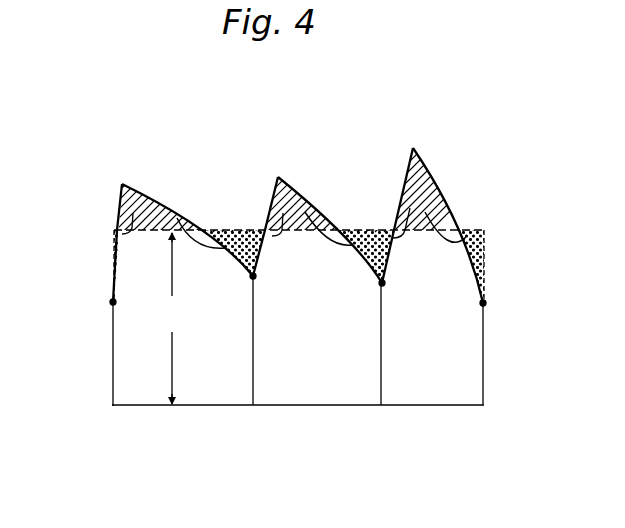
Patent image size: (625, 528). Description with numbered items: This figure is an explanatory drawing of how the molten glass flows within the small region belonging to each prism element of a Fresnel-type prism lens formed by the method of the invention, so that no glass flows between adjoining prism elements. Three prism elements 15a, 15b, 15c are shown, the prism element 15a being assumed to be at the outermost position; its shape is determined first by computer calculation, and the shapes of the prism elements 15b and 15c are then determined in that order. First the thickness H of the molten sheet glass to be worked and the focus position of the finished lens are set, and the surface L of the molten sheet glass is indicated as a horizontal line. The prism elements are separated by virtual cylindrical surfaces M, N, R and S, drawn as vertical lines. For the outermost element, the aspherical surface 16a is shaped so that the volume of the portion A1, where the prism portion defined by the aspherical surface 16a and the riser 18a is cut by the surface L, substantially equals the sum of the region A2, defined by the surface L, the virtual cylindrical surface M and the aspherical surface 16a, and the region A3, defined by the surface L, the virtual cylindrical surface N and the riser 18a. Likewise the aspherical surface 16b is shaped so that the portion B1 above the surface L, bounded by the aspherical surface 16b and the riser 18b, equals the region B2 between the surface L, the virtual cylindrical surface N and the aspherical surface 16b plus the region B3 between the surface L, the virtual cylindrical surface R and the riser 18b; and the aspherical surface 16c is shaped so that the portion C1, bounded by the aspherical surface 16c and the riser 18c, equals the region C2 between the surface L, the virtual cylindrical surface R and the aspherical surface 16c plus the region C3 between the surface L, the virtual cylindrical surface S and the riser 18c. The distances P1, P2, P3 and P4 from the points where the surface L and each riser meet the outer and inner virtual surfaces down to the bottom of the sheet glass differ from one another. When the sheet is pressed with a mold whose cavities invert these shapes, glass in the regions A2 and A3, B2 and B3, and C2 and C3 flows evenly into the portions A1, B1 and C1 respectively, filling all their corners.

The portion C1 is at (128, 183).
The aspherical surface 16c is at (177, 218).
The riser 18b is at (270, 200).
The portion B1 is at (283, 195).
The aspherical surface 16b is at (310, 210).
The portion A1 is at (420, 178).
The aspherical surface 16a is at (455, 207).
The surface of the molten sheet glass L is at (477, 217).
The riser 18a is at (400, 199).
The riser 18c is at (120, 207).
The region B3 is at (259, 240).
The region A2 is at (480, 247).
The region A3 is at (391, 243).
The region C3 is at (114, 256).
The distance P4 is at (97, 303).
The thickness of molten sheet glass H is at (172, 318).
The region C2 is at (240, 266).
The distance P3 is at (268, 279).
The region B2 is at (368, 263).
The distance P2 is at (397, 291).
The distance P1 is at (498, 304).
The virtual cylindrical surface S is at (112, 340).
The prism element 15c is at (195, 392).
The virtual cylindrical surface R is at (253, 375).
The prism element 15b is at (323, 390).
The virtual cylindrical surface N is at (381, 372).
The prism element 15a is at (430, 393).
The virtual cylindrical surface M is at (483, 375).